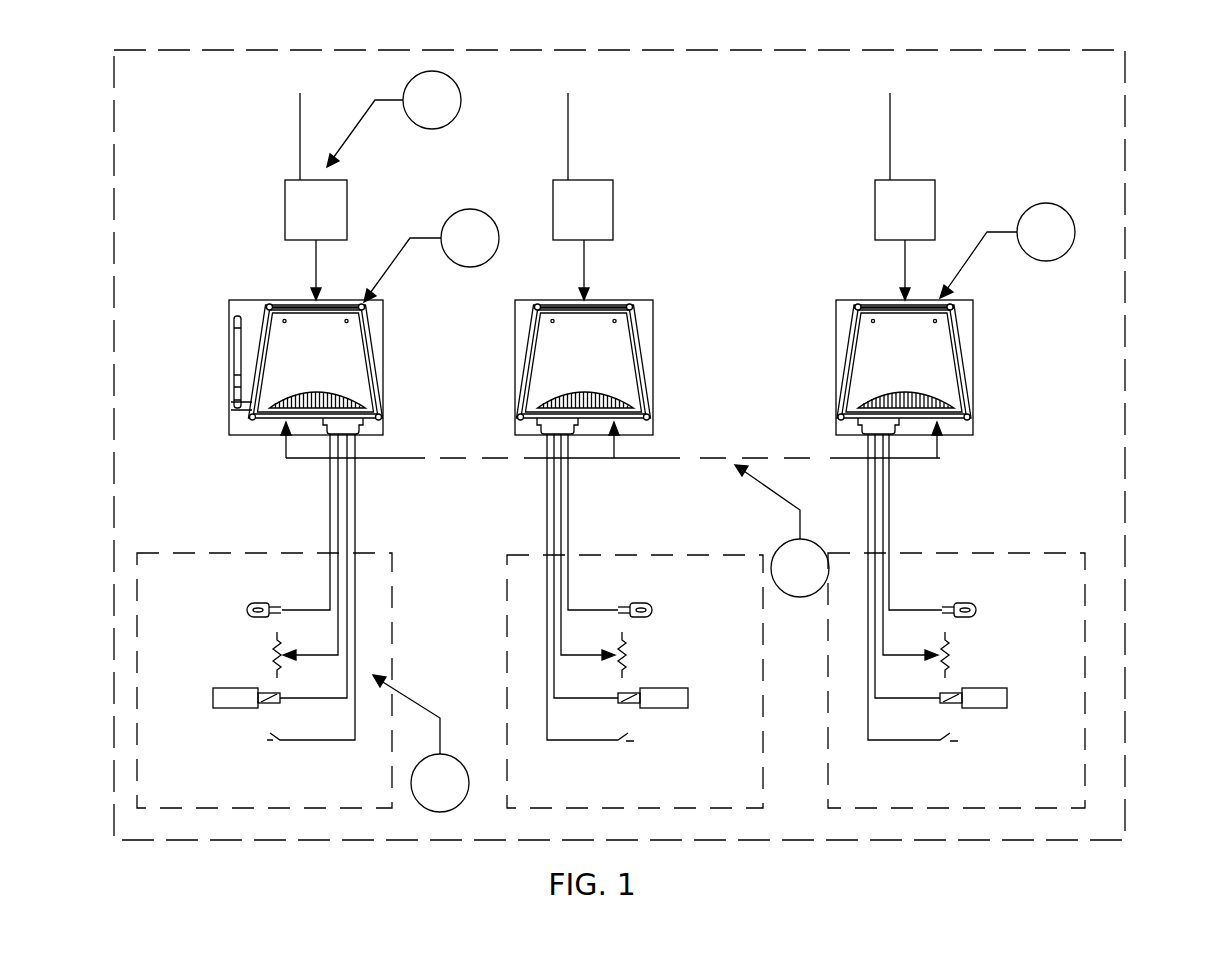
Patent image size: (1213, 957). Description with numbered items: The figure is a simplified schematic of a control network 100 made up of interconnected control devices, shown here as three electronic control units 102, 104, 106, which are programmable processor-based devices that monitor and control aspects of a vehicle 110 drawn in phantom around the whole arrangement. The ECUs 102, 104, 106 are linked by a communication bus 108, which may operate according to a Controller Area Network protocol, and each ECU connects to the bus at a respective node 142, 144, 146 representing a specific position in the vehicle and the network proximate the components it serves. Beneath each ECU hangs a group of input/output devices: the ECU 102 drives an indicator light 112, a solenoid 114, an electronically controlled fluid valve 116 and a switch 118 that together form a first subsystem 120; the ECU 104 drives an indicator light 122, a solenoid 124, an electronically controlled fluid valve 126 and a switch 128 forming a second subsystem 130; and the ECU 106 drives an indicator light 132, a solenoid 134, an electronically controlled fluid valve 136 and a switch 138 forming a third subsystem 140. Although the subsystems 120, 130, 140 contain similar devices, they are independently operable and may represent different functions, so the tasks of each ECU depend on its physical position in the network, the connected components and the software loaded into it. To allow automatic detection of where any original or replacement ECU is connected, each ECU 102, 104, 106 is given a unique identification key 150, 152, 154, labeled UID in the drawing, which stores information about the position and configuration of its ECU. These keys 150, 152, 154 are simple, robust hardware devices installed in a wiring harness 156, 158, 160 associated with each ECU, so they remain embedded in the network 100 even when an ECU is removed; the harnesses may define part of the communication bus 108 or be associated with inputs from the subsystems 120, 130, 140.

The control network 100 is at (775, 165).
The electronic control unit 102 is at (262, 293).
The electronic control unit 104 is at (668, 292).
The electronic control unit 106 is at (856, 288).
The communication bus 108 is at (676, 494).
The vehicle 110 is at (1127, 357).
The indicator light 112 is at (248, 603).
The solenoid 114 is at (267, 653).
The electronically controlled fluid valve 116 is at (258, 715).
The switch 118 is at (277, 752).
The first subsystem 120 is at (148, 550).
The indicator light 122 is at (642, 600).
The solenoid 124 is at (635, 652).
The electronically controlled fluid valve 126 is at (670, 683).
The switch 128 is at (627, 752).
The second subsystem 130 is at (527, 553).
The indicator light 132 is at (967, 597).
The solenoid 134 is at (957, 648).
The electronically controlled fluid valve 136 is at (997, 683).
The switch 138 is at (952, 748).
The third subsystem 140 is at (1000, 540).
The node 142 is at (283, 463).
The node 144 is at (625, 454).
The node 146 is at (942, 457).
The unique identification key 150 is at (347, 195).
The unique identification key 152 is at (592, 173).
The unique identification key 154 is at (915, 173).
The wiring harness 156 is at (296, 131).
The wiring harness 158 is at (572, 118).
The wiring harness 160 is at (895, 123).